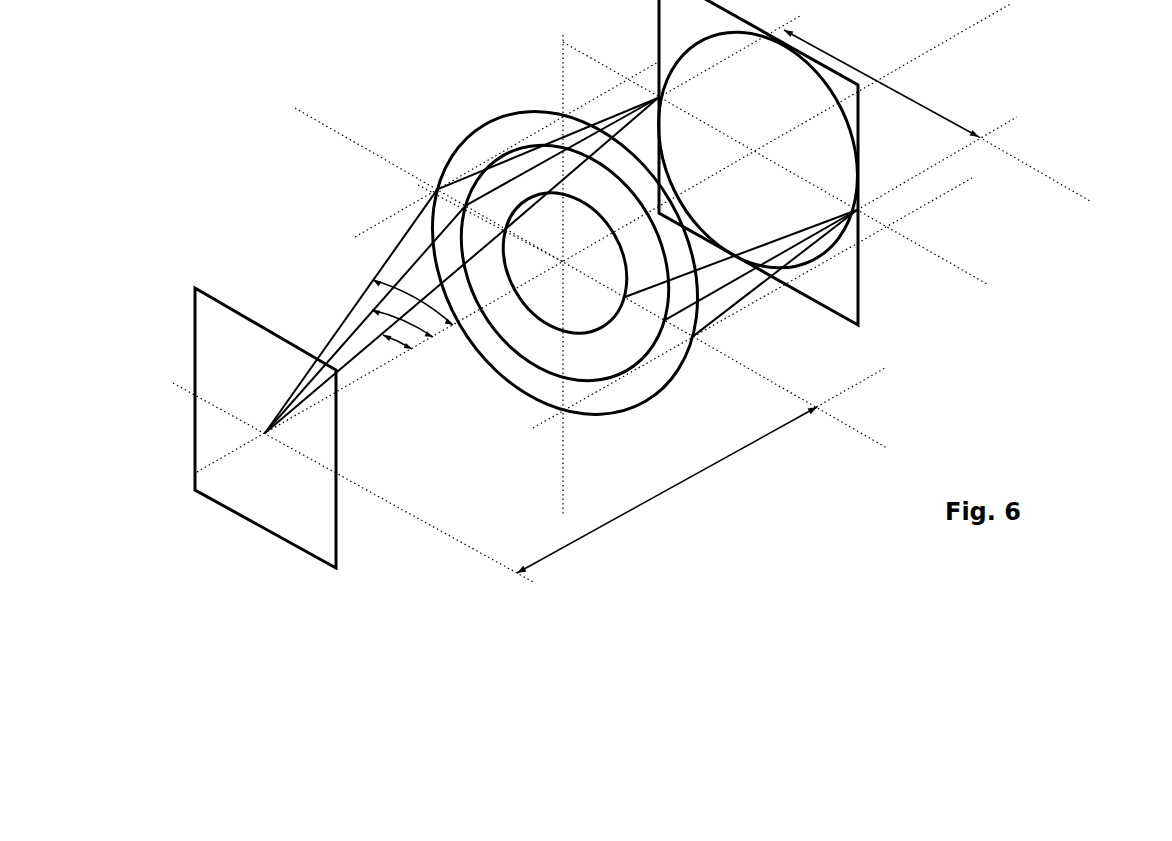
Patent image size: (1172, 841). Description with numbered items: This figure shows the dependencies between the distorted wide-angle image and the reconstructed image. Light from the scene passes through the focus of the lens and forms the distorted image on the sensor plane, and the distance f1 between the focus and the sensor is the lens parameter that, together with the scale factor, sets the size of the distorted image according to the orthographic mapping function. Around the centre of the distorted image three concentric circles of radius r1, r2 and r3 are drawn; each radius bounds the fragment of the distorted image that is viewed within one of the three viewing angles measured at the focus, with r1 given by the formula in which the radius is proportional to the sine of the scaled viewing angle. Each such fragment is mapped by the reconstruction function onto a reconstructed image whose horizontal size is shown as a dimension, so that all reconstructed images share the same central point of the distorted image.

The focus point focus is at (189, 390).
The sensor sensor plane is at (186, 428).
The size of the reconstructed image horizontal size is at (970, 83).
The radius r1 is at (565, 263).
The radius r2 is at (565, 263).
The radius r3 is at (565, 263).
The distance f1 is at (667, 490).